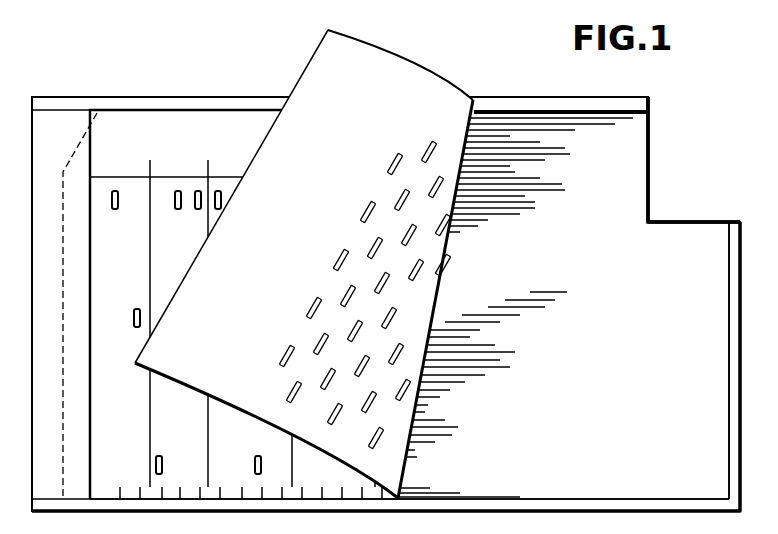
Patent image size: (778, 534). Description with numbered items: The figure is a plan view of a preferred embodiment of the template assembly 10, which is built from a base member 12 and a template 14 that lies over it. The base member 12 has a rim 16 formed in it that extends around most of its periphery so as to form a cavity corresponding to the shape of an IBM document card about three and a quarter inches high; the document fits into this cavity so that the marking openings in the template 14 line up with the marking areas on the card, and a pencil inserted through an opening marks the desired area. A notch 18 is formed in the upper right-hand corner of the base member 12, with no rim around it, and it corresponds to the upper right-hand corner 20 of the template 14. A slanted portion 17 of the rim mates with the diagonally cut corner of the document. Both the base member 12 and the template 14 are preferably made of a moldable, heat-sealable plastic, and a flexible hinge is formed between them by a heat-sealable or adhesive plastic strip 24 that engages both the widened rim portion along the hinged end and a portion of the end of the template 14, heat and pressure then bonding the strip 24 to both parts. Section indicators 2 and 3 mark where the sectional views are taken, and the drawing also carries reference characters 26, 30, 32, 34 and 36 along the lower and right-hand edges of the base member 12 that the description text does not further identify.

The template assembly 10 is at (506, 86).
The base member 12 is at (638, 293).
The template 14 is at (304, 264).
The rim 16 is at (733, 246).
The slanted portion 17 is at (97, 112).
The notch 18 is at (650, 156).
The upper right-hand corner 20 is at (316, 62).
The plastic strip 24 is at (52, 125).
The bottom edge 26 is at (644, 533).
The inner bottom edge 30 is at (614, 533).
The card bottom edge 32 is at (552, 532).
The inner right edge 34 is at (713, 378).
The outer right edge 36 is at (731, 533).
The section line 2- 2 is at (772, 314).
The section line 3- 3 is at (150, 65).